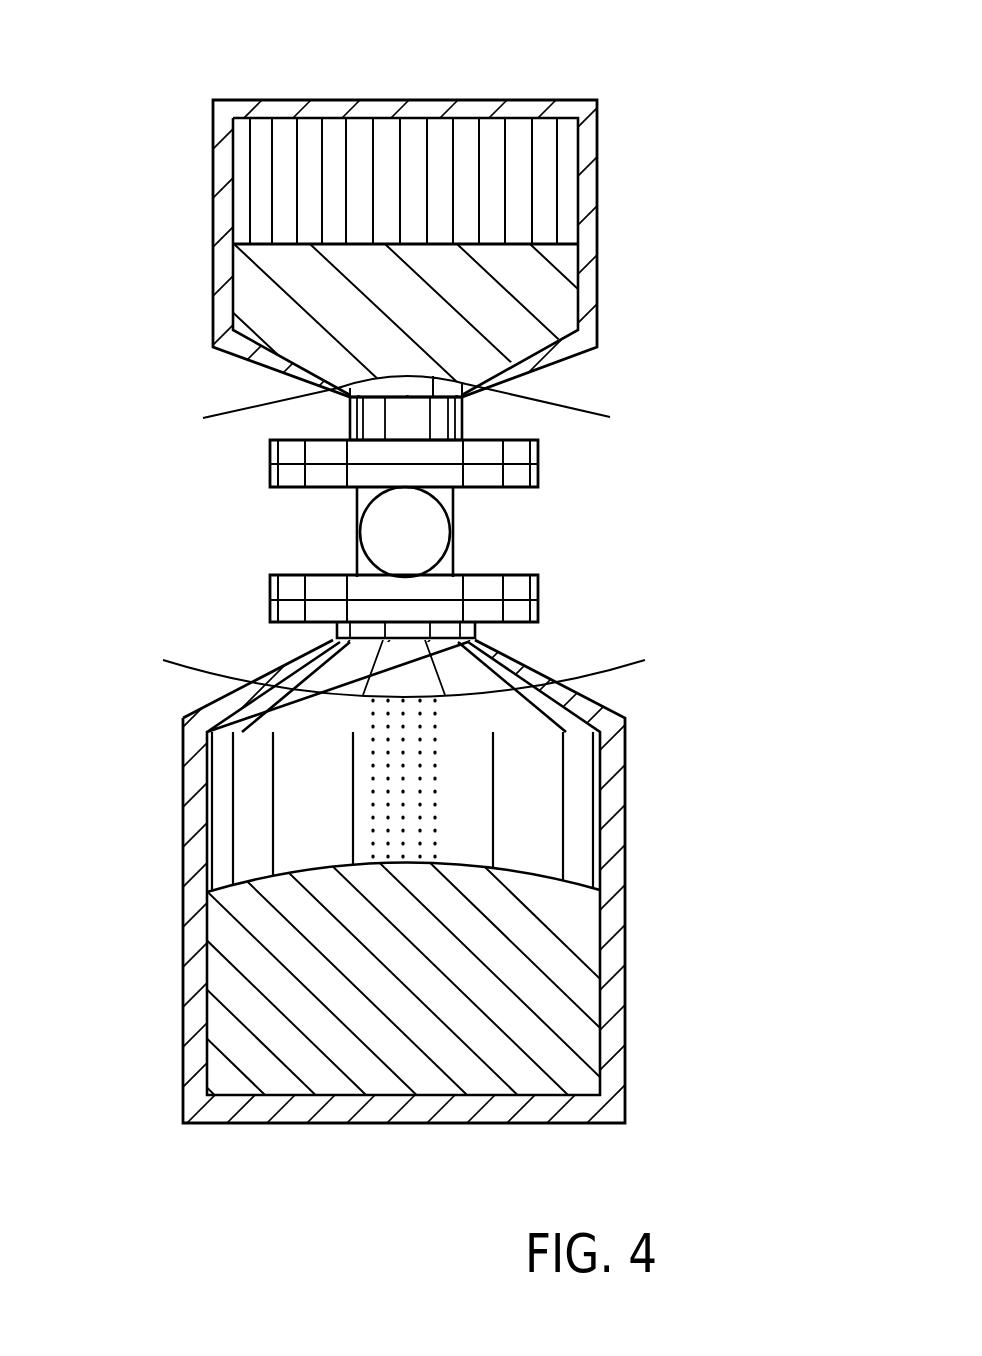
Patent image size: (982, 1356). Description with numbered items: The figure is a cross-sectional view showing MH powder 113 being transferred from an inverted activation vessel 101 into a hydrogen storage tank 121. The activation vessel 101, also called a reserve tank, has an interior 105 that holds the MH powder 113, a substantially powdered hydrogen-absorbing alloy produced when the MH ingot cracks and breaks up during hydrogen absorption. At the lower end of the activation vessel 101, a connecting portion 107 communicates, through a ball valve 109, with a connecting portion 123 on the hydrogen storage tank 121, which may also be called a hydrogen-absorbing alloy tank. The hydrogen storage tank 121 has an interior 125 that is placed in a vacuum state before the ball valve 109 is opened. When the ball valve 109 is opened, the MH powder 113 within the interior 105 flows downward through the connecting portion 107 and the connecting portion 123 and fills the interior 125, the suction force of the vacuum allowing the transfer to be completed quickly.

The activation vessel 101 is at (678, 197).
The interior 105 is at (424, 191).
The connecting portion 107 is at (575, 447).
The ball valve 109 is at (423, 540).
The MH powder 113 is at (523, 265).
The hydrogen storage tank 121 is at (652, 910).
The connecting portion 123 is at (572, 635).
The interior 125 is at (267, 794).